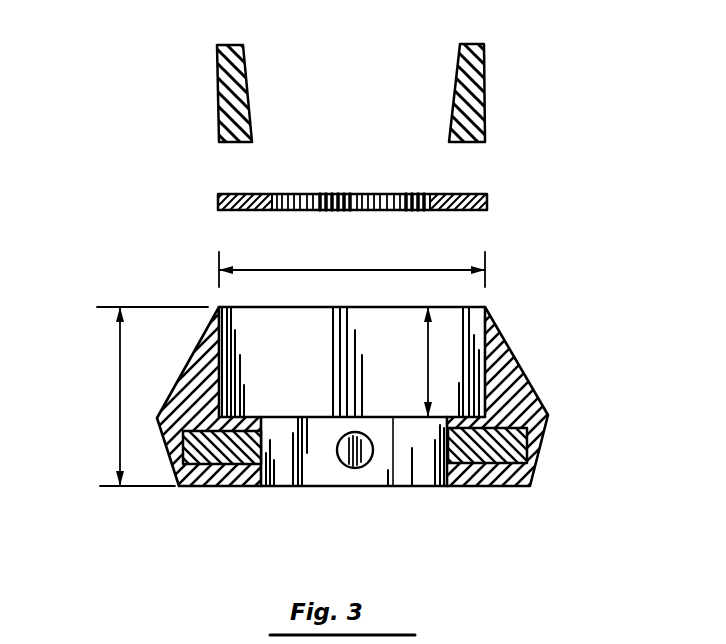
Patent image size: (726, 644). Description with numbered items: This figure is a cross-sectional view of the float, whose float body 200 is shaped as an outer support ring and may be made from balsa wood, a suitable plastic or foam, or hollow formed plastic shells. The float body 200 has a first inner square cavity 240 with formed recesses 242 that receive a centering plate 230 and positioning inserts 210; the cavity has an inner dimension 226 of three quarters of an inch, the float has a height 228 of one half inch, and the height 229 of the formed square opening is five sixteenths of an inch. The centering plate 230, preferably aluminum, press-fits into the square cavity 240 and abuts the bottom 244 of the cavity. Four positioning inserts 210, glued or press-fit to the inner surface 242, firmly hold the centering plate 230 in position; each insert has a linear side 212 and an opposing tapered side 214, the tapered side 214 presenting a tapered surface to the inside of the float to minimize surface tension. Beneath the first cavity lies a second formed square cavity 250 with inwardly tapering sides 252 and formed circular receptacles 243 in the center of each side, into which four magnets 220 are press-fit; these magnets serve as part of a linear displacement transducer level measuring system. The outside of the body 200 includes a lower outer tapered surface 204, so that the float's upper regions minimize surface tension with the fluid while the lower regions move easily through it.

The float body 200 is at (520, 365).
The lower outer tapered surface 204 is at (543, 443).
The positioning inserts 210 is at (240, 100).
The linear side 212 is at (216, 92).
The tapered side 214 is at (252, 120).
The magnets 220 is at (338, 457).
The inner dimension 226 is at (382, 270).
The height of the float 228 is at (120, 399).
The height of the formed square opening 229 is at (428, 347).
The centering plate 230 is at (352, 194).
The first inner square cavity 240 is at (412, 392).
The formed recesses 242 is at (223, 342).
The formed circular receptacles 243 is at (505, 487).
The bottom of the cavity 244 is at (243, 394).
The second formed square cavity 250 is at (410, 486).
The inwardly tapering sides 252 is at (250, 487).